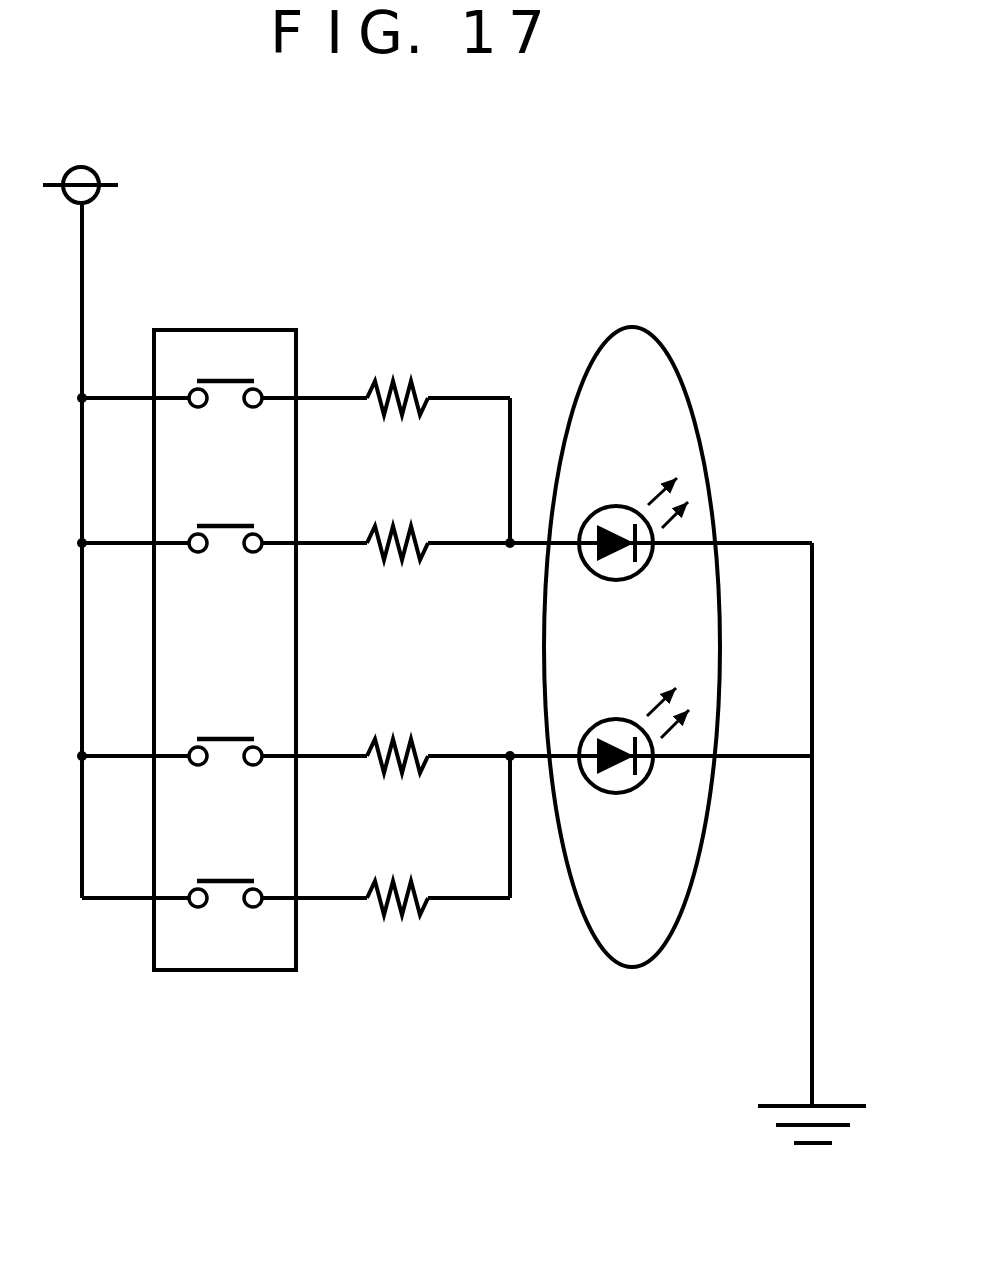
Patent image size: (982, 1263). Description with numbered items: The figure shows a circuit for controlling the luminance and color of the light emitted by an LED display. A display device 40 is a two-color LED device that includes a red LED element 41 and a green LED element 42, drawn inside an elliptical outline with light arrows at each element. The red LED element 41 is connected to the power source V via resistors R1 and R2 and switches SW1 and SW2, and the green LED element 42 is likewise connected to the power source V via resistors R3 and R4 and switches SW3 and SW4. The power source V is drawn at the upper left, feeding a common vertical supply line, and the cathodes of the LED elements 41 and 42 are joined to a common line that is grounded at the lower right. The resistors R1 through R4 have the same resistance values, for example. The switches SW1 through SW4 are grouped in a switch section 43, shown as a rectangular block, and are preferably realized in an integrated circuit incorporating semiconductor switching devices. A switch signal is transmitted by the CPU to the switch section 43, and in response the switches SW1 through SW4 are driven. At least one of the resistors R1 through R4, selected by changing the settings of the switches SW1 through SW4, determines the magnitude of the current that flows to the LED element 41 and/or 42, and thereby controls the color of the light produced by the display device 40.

The power source V is at (79, 167).
The switch SW1 is at (224, 375).
The switch SW2 is at (227, 522).
The switch SW3 is at (225, 733).
The switch SW4 is at (227, 874).
The resistor R1 is at (398, 378).
The resistor R2 is at (402, 573).
The resistor R3 is at (390, 735).
The resistor R4 is at (395, 920).
The display device 40 is at (685, 382).
The red LED element 41 is at (617, 507).
The green LED element 42 is at (644, 784).
The switch section 43 is at (207, 970).